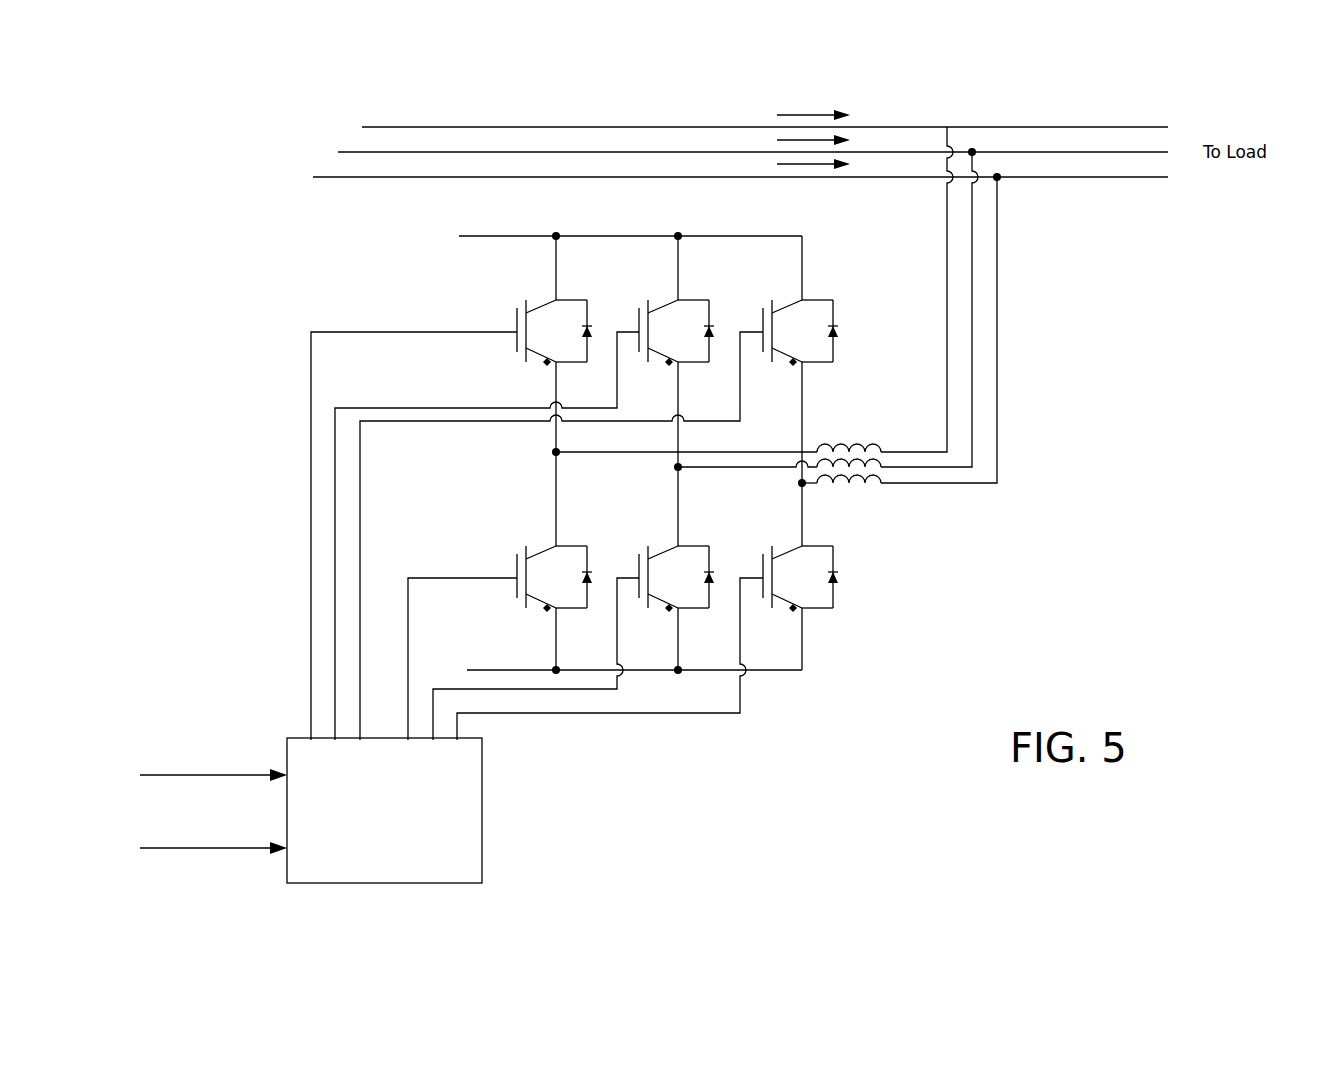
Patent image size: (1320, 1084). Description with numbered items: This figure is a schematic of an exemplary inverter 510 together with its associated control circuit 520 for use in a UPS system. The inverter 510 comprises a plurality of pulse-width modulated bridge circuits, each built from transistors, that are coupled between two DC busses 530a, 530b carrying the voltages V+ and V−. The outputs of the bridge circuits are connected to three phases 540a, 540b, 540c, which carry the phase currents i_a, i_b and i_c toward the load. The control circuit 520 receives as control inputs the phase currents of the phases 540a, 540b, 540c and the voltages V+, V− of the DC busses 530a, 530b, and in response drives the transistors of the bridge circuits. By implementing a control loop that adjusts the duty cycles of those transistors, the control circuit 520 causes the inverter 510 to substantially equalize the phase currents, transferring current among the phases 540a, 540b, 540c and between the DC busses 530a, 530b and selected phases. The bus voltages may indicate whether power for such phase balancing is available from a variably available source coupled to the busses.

The inverter 510 is at (228, 280).
The control circuit 520 is at (385, 884).
The DC bus 530a is at (507, 236).
The DC bus 530b is at (530, 670).
The phase 540a is at (376, 127).
The phase 540b is at (355, 152).
The phase 540c is at (331, 177).